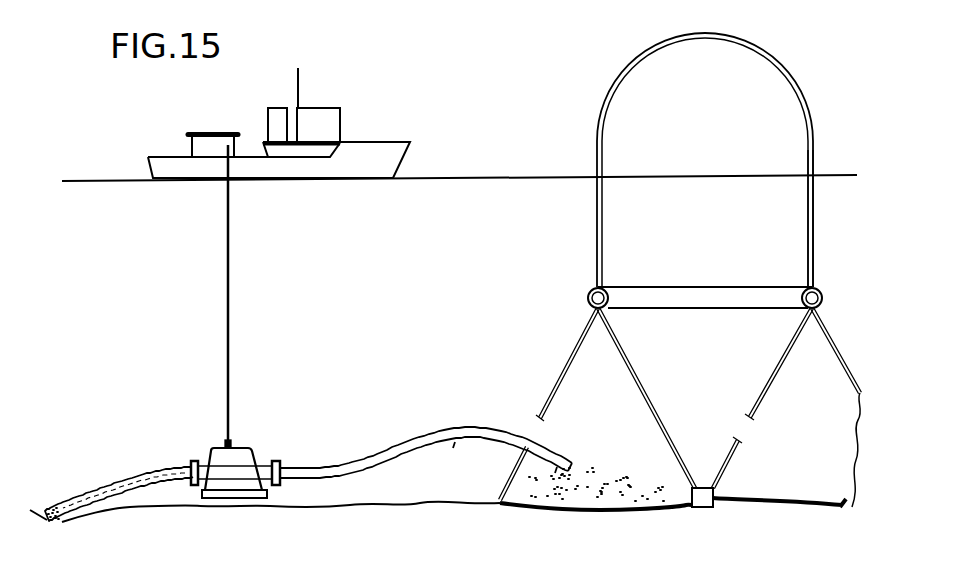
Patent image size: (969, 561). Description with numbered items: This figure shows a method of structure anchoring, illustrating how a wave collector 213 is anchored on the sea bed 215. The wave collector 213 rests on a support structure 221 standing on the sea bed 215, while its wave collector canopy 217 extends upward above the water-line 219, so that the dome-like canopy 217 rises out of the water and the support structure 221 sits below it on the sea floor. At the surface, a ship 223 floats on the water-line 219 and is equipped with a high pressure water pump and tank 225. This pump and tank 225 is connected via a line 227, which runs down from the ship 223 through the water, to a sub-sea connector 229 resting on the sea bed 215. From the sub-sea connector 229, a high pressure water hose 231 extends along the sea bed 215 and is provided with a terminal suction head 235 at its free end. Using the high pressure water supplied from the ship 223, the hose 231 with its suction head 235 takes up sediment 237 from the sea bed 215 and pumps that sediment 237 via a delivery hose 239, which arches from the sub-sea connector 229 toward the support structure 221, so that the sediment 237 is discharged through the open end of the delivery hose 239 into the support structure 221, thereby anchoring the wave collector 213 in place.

The wave collector 213 is at (610, 80).
The sea bed 215 is at (407, 505).
The wave collector canopy 217 is at (813, 125).
The water-line 219 is at (480, 177).
The support structure 221 is at (553, 389).
The ship 223 is at (343, 113).
The high pressure water pump and tank 225 is at (208, 132).
The line 227 is at (232, 350).
The sub-sea connector 229 is at (258, 452).
The high pressure water hose 231 is at (127, 480).
The terminal suction head 235 is at (50, 508).
The sediment 237 is at (72, 523).
The delivery hose 239 is at (398, 445).